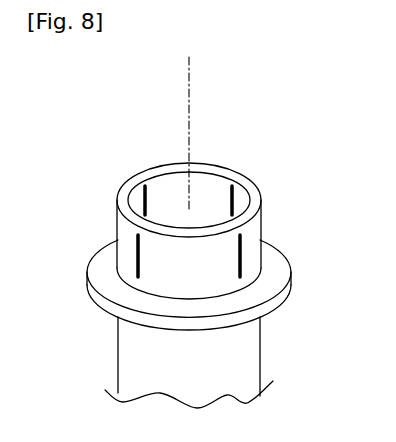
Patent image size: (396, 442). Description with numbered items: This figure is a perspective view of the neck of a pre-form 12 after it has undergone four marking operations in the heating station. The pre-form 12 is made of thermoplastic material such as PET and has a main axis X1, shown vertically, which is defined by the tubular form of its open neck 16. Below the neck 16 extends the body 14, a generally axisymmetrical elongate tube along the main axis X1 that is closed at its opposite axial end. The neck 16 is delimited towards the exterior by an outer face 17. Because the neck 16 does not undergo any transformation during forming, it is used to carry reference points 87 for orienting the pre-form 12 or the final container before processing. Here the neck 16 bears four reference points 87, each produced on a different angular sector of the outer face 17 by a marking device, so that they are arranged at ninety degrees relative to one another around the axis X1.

The pre-form 12 is at (206, 261).
The body 14 is at (244, 363).
The neck 16 is at (296, 197).
The outer face 17 is at (167, 268).
The reference point 87 is at (150, 198).
The main axis X1 is at (190, 108).